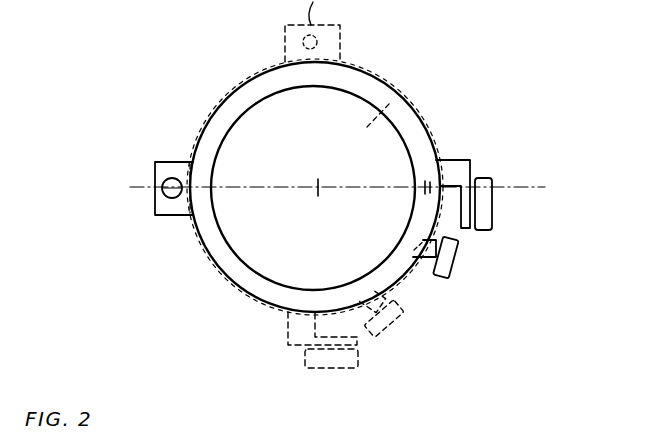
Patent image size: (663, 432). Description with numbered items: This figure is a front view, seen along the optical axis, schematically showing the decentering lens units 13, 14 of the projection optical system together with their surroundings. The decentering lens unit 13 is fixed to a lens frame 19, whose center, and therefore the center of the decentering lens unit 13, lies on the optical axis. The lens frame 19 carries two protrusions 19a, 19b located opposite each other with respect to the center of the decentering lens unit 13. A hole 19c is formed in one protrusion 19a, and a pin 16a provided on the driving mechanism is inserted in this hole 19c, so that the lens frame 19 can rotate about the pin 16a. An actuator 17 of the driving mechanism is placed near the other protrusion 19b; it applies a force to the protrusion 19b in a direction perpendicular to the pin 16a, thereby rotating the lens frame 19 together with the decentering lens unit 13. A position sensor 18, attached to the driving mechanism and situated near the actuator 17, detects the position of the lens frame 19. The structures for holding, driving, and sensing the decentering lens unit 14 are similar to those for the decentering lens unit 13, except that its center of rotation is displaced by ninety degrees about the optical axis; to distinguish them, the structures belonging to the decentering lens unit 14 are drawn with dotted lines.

The decentering lens unit 13 is at (285, 263).
The decentering lens unit 14 is at (393, 100).
The pin 16a is at (304, 43).
The actuator 17 is at (493, 208).
The position sensor 18 is at (453, 265).
The lens frame 19 is at (365, 72).
The protrusion 19a is at (153, 173).
The protrusion 19b is at (455, 153).
The hole 19c is at (172, 165).